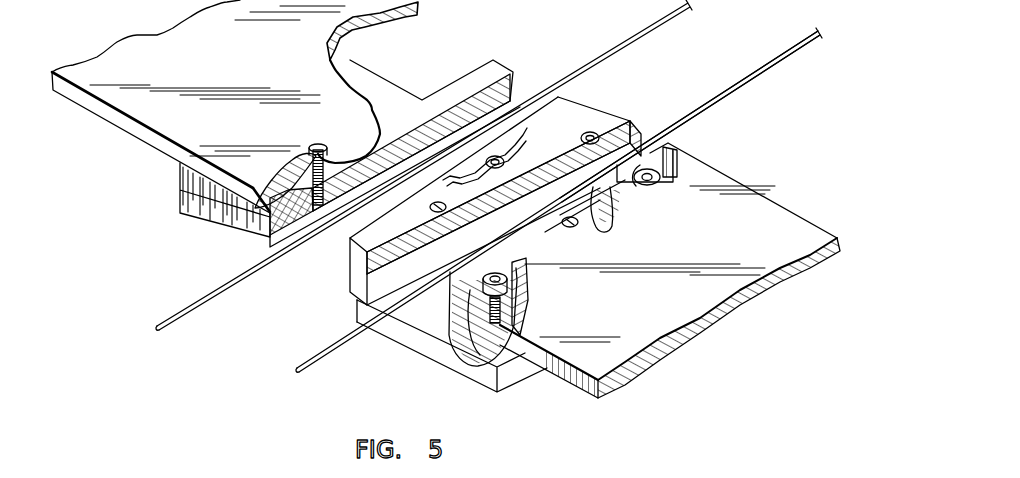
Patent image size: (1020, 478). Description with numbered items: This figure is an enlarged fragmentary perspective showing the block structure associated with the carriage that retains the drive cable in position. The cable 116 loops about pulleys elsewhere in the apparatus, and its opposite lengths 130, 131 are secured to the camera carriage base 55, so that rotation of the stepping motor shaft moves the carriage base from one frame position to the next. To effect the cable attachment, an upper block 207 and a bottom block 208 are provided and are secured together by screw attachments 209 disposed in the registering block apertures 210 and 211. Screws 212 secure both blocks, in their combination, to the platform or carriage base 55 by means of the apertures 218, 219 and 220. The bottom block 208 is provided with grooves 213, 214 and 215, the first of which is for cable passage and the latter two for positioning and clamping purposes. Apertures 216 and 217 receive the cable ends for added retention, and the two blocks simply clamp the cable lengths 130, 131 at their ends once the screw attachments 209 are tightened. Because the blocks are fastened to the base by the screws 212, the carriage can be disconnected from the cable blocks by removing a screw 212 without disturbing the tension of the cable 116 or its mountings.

The camera carriage base 55 is at (693, 318).
The cable 116 is at (230, 287).
The cable length 130 is at (353, 337).
The cable length 131 is at (755, 76).
The base block 207 is at (505, 352).
The bottom block 208 is at (487, 375).
The screw attachment 209 is at (517, 267).
The block aperture 210 is at (515, 297).
The block aperture 211 is at (505, 318).
The screw 212 is at (318, 146).
The groove 213 is at (297, 262).
The groove 214 is at (353, 313).
The groove 215 is at (670, 141).
The aperture 216 is at (430, 270).
The aperture 217 is at (603, 237).
The aperture 218 is at (305, 150).
The aperture 219 is at (268, 235).
The aperture 220 is at (290, 238).